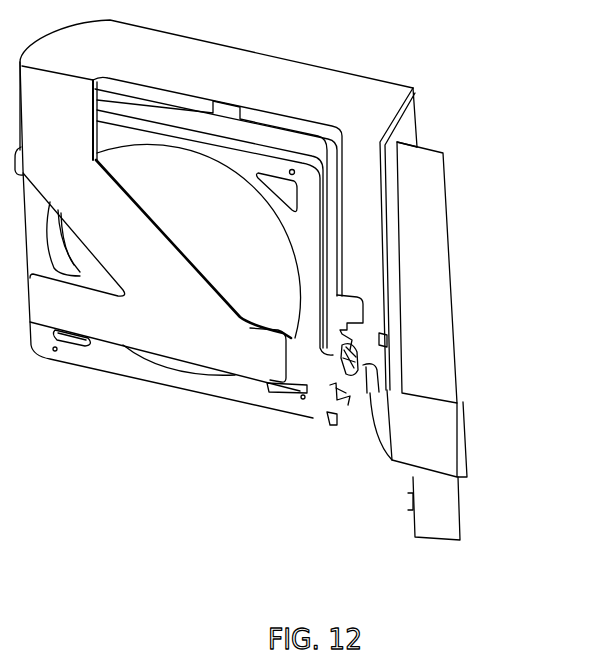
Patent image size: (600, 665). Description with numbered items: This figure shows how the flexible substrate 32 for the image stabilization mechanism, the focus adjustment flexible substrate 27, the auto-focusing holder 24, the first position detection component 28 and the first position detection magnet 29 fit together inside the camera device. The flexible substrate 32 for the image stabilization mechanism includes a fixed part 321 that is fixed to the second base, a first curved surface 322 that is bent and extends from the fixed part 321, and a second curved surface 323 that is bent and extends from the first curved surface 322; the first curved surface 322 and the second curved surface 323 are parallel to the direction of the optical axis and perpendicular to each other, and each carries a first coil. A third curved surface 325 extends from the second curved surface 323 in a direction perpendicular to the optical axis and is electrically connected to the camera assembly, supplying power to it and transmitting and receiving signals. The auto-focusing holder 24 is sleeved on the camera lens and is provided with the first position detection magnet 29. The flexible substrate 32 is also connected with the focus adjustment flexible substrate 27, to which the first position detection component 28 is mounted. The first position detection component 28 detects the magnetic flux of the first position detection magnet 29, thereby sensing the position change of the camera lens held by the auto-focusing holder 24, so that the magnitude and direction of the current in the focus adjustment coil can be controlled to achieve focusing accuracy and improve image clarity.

The auto-focusing holder 24 is at (312, 343).
The focus adjustment flexible substrate 27 is at (378, 385).
The first position detection component 28 is at (357, 378).
The first position detection magnet 29 is at (330, 353).
The flexible substrate for the image stabilization mechanism 32 is at (342, 314).
The fixed part 321 is at (428, 347).
The first curved surface 322 is at (397, 367).
The second curved surface 323 is at (348, 90).
The third curved surface 325 is at (122, 237).